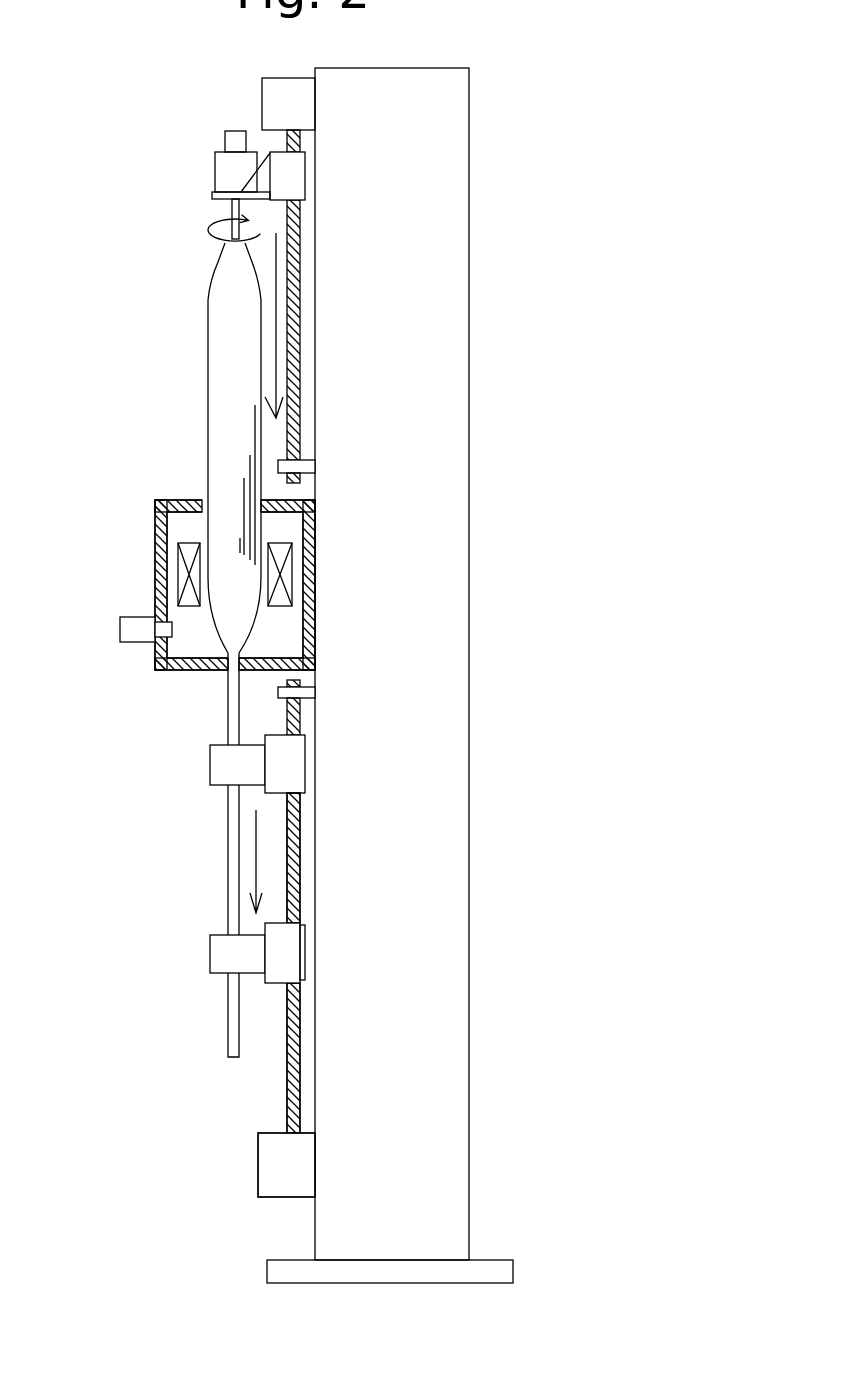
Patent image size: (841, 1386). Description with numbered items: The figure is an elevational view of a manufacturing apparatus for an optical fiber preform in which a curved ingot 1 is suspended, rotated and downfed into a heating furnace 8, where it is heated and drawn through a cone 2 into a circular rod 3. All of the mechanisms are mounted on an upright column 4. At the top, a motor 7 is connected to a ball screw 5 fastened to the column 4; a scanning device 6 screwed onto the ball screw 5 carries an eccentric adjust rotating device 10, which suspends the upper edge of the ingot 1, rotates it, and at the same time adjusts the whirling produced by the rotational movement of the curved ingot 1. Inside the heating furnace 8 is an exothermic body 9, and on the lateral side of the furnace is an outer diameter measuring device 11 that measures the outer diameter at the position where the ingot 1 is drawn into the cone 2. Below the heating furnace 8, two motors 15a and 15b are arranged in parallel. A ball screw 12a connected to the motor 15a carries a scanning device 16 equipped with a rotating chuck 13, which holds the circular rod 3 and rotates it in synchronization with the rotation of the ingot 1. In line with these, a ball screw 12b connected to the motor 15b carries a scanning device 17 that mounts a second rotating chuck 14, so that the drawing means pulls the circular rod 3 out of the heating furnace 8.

The ingot 1 is at (227, 358).
The cone 2 is at (228, 597).
The circular rod 3 is at (233, 855).
The column 4 is at (437, 368).
The ball screw 5 is at (293, 345).
The scanning device 6 is at (295, 175).
The motor 7 is at (273, 102).
The heating furnace 8 is at (178, 502).
The exothermic body 9 is at (183, 575).
The eccentric adjust rotating device 10 is at (228, 173).
The outer diameter measuring device 11 is at (135, 633).
The ball screw 12a is at (293, 870).
The ball screw 12b is at (364, 963).
The rotating chuck 13 is at (225, 768).
The rotating chuck 14 is at (225, 950).
The motor 15a is at (287, 1172).
The motor 15b is at (346, 1169).
The scanning device 16 is at (292, 768).
The scanning device 17 is at (290, 955).